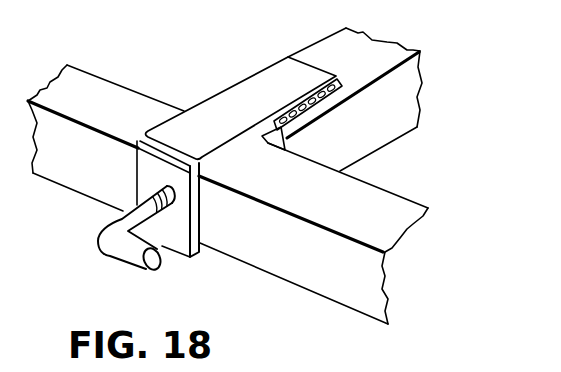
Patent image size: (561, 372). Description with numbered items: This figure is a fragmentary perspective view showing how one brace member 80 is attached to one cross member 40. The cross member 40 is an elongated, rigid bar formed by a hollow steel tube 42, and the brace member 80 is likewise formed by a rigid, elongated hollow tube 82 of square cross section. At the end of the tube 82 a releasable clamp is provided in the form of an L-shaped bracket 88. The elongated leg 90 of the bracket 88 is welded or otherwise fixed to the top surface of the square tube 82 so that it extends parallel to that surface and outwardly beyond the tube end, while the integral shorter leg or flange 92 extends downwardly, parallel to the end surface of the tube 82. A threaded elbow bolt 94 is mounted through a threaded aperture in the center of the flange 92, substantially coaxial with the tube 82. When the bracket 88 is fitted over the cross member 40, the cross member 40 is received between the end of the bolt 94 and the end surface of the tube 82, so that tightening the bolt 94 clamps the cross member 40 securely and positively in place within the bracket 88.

The cross member 40 is at (135, 92).
The hollow tube 42 is at (93, 165).
The brace member 80 is at (315, 43).
The hollow tube 82 is at (393, 117).
The L-shaped bracket 88 is at (248, 78).
The elongated leg 90 is at (258, 119).
The flange 92 is at (181, 241).
The elbow bolt 94 is at (117, 240).